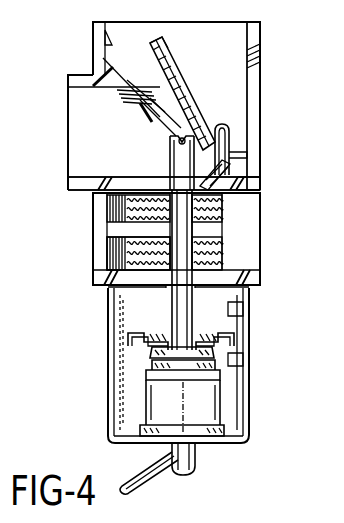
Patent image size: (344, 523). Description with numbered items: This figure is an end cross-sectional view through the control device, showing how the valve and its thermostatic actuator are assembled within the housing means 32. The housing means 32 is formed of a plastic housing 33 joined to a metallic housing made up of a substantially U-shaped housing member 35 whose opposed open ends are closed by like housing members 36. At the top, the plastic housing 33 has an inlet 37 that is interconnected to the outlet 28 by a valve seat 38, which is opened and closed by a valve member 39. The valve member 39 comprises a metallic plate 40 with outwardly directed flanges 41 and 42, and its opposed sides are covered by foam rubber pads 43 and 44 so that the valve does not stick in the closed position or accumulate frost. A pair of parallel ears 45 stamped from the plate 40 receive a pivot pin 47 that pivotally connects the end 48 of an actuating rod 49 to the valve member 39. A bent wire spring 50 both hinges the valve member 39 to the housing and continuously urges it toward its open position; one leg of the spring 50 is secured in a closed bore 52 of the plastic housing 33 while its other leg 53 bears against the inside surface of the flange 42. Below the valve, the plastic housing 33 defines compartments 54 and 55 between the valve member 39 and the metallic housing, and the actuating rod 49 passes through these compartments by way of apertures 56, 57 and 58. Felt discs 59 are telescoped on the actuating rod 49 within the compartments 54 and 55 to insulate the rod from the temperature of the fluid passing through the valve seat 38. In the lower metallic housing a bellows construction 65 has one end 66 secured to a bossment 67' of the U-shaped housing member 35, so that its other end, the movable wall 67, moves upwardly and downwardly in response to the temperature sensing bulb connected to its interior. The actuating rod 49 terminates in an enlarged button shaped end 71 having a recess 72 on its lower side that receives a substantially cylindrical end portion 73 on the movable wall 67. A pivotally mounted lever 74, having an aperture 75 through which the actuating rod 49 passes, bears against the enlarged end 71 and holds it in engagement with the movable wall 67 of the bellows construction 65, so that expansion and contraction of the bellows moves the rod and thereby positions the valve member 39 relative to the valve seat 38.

The outlet 28 is at (80, 131).
The housing means 32 is at (264, 117).
The plastic housing 33 is at (261, 86).
The U-shaped housing member 35 is at (250, 378).
The housing member 36 is at (238, 327).
The inlet 37 is at (193, 12).
The valve seat 38 is at (105, 37).
The valve member 39 is at (188, 68).
The metallic plate 40 is at (167, 68).
The flange 41 is at (165, 38).
The flange 42 is at (260, 150).
The foam rubber pad 43 is at (193, 98).
The foam rubber pad 44 is at (160, 80).
The ear 45 is at (140, 111).
The pivot pin 47 is at (178, 141).
The end of actuating rod 48 is at (172, 157).
The actuating rod 49 is at (224, 226).
The bent wire spring 50 is at (220, 128).
The closed bore 52 is at (260, 177).
The leg 53 is at (264, 188).
The compartment 54 is at (107, 213).
The compartment 55 is at (118, 261).
The aperture 56 is at (165, 288).
The aperture 57 is at (120, 231).
The aperture 58 is at (74, 188).
The felt disc 59 is at (223, 205).
The bellows construction 65 is at (220, 393).
The end of bellows 66 is at (220, 434).
The movable wall 67 is at (151, 376).
The bossment 67' is at (206, 467).
The button shaped end 71 is at (244, 352).
The recess 72 is at (176, 350).
The cylindrical end portion 73 is at (165, 360).
The lever 74 is at (215, 330).
The aperture 75 is at (198, 343).